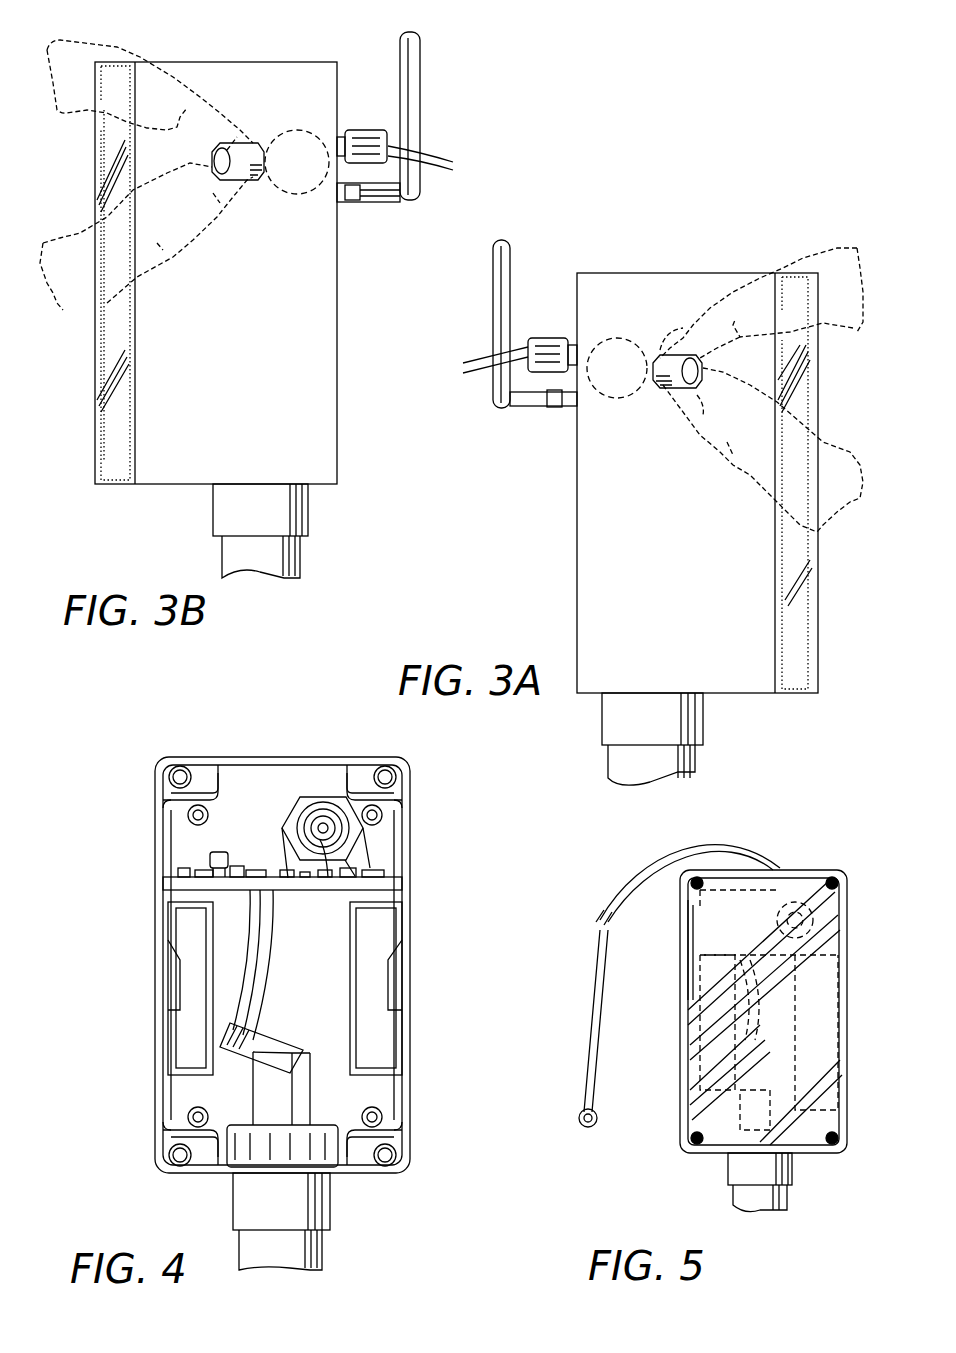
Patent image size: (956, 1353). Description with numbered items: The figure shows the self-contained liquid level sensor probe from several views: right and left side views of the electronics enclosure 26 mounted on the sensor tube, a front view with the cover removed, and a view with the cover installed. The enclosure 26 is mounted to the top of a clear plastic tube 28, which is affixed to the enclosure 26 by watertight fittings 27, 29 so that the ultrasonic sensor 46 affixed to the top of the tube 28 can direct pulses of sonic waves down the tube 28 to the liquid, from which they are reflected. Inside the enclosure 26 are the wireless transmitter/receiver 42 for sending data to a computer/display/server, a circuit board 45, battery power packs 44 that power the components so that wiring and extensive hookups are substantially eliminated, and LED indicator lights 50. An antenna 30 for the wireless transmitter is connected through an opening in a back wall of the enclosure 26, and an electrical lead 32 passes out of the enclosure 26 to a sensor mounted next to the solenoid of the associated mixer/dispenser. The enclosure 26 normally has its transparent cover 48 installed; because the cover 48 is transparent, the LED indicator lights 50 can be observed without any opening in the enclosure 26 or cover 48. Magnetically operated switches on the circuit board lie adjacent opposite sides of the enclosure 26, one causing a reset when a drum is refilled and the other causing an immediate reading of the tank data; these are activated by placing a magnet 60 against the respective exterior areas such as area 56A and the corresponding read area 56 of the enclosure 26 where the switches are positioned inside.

In FIG. 3B, the enclosure 26 is at (240, 62).
In FIG. 3A, the enclosure 26 is at (577, 497).
In FIG. 4, the enclosure 26 is at (200, 757).
In FIG. 5, the enclosure 26 is at (780, 870).
In FIG. 3B, the watertight fitting 27 is at (213, 510).
In FIG. 3A, the watertight fitting 27 is at (652, 719).
In FIG. 4, the watertight fitting 27 is at (333, 1205).
In FIG. 5, the watertight fitting 27 is at (760, 1169).
In FIG. 3B, the clear plastic tube 28 is at (222, 555).
In FIG. 3A, the clear plastic tube 28 is at (651, 765).
In FIG. 4, the clear plastic tube 28 is at (322, 1252).
In FIG. 5, the clear plastic tube 28 is at (733, 1198).
In FIG. 4, the watertight fitting 29 is at (338, 1130).
In FIG. 3B, the antenna 30 is at (420, 72).
In FIG. 3A, the antenna 30 is at (510, 262).
In FIG. 4, the antenna 30 is at (308, 790).
In FIG. 3B, the electrical lead 32 is at (432, 160).
In FIG. 3A, the electrical lead 32 is at (480, 370).
In FIG. 5, the electrical lead 32 is at (679, 986).
In FIG. 4, the wireless transmitter/receiver 42 is at (372, 851).
In FIG. 4, the battery power packs 44 is at (165, 932).
In FIG. 4, the circuit board 45 is at (193, 864).
In FIG. 4, the ultrasonic sensor 46 is at (260, 1100).
In FIG. 3B, the transparent cover 48 is at (98, 362).
In FIG. 5, the transparent cover 48 is at (710, 1042).
In FIG. 4, the LED indicator lights 50 is at (385, 880).
In FIG. 3A, the read button 56 is at (618, 338).
In FIG. 3B, the area of the enclosure exterior 56A is at (300, 130).
In FIG. 3B, the magnet 60 is at (227, 147).
In FIG. 3A, the magnet 60 is at (687, 362).